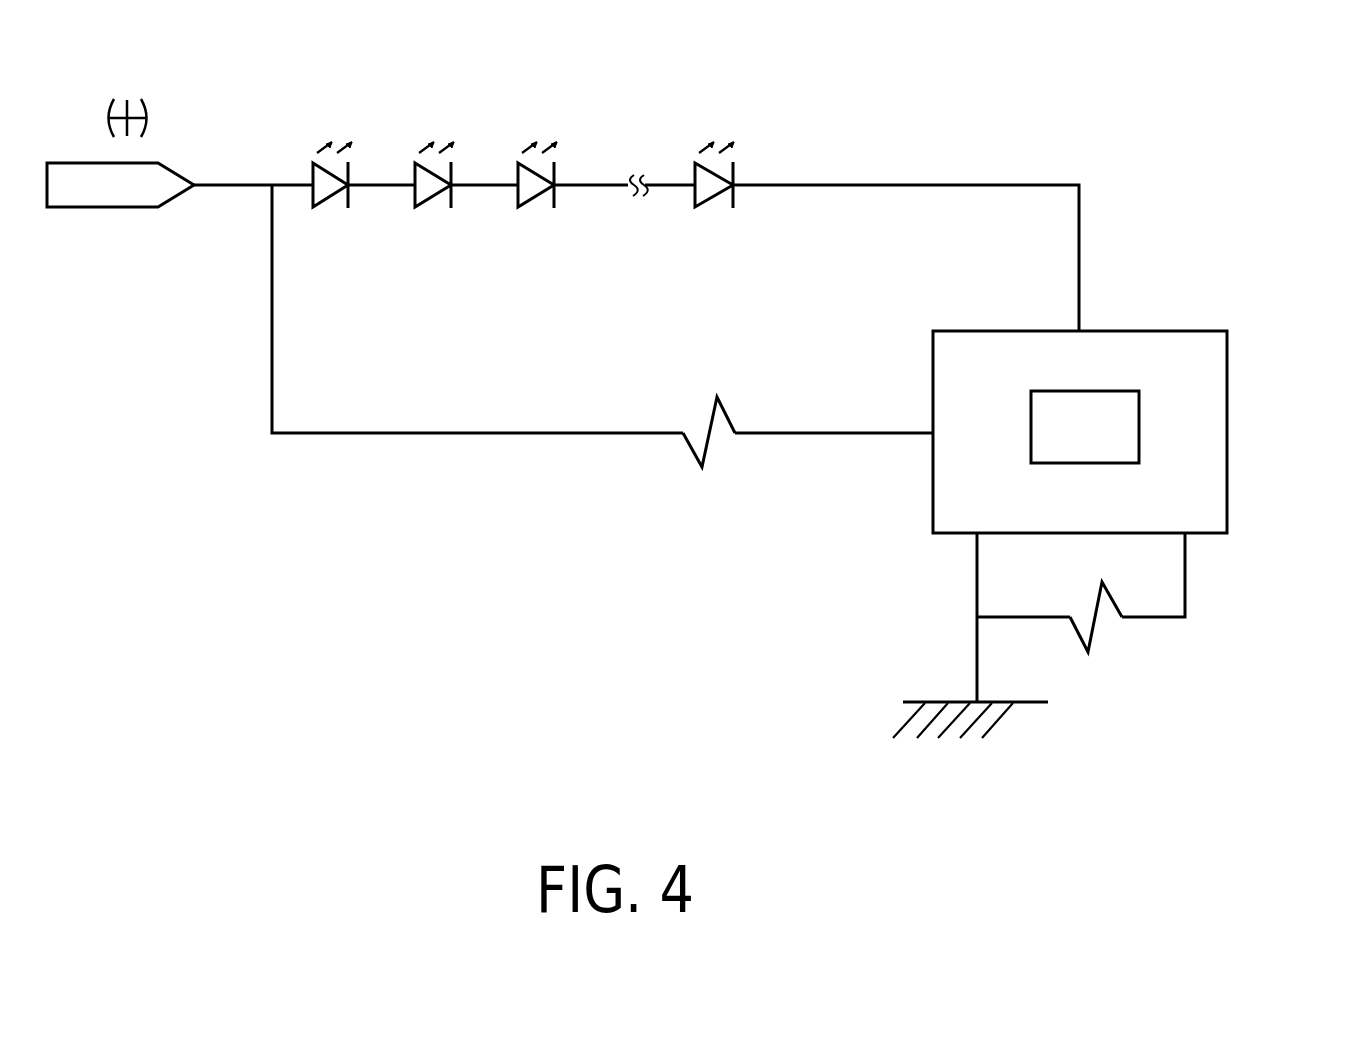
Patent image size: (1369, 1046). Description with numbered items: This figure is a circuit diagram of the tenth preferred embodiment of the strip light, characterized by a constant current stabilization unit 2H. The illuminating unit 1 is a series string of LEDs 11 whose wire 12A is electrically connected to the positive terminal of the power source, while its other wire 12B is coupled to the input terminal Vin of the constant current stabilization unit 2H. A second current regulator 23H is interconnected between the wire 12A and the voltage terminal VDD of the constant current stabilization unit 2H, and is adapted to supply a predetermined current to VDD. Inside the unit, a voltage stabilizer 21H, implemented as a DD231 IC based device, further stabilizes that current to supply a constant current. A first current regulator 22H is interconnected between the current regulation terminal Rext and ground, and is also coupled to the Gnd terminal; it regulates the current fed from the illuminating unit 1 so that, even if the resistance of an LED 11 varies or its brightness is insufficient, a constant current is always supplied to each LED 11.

The illuminating unit 1 is at (523, 188).
The LED 11 is at (415, 207).
The wire 12A is at (251, 185).
The wire 12B is at (782, 184).
The constant current stabilization unit 2H is at (1150, 335).
The voltage stabilizer 21H is at (1103, 441).
The first current regulator 22H is at (1102, 625).
The second current regulator 23H is at (690, 455).